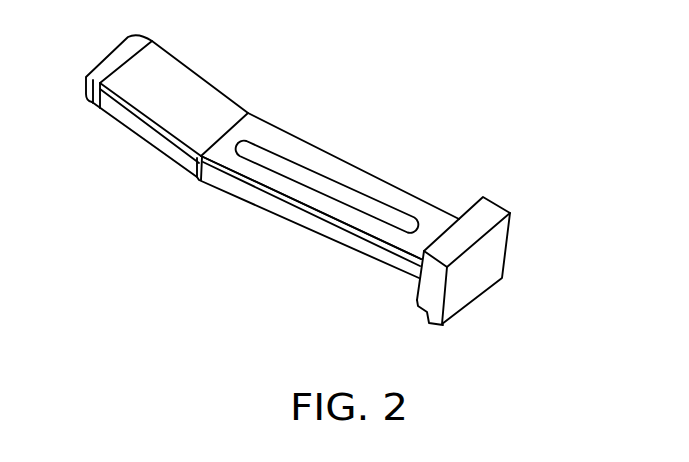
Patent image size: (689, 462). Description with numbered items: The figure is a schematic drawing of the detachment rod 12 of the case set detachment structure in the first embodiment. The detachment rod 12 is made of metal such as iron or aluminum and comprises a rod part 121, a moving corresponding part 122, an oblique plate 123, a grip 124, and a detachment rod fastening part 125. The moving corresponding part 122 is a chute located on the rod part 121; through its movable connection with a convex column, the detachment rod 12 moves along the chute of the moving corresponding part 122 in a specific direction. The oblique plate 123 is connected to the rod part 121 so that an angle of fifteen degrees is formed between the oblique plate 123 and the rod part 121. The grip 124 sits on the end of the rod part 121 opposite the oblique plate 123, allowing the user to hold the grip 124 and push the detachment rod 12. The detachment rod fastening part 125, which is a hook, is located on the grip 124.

The detachment rod 12 is at (152, 265).
The rod part 121 is at (342, 213).
The moving corresponding part 122 is at (330, 187).
The oblique plate 123 is at (157, 90).
The grip 124 is at (493, 245).
The detachment rod fastening part 125 is at (436, 326).